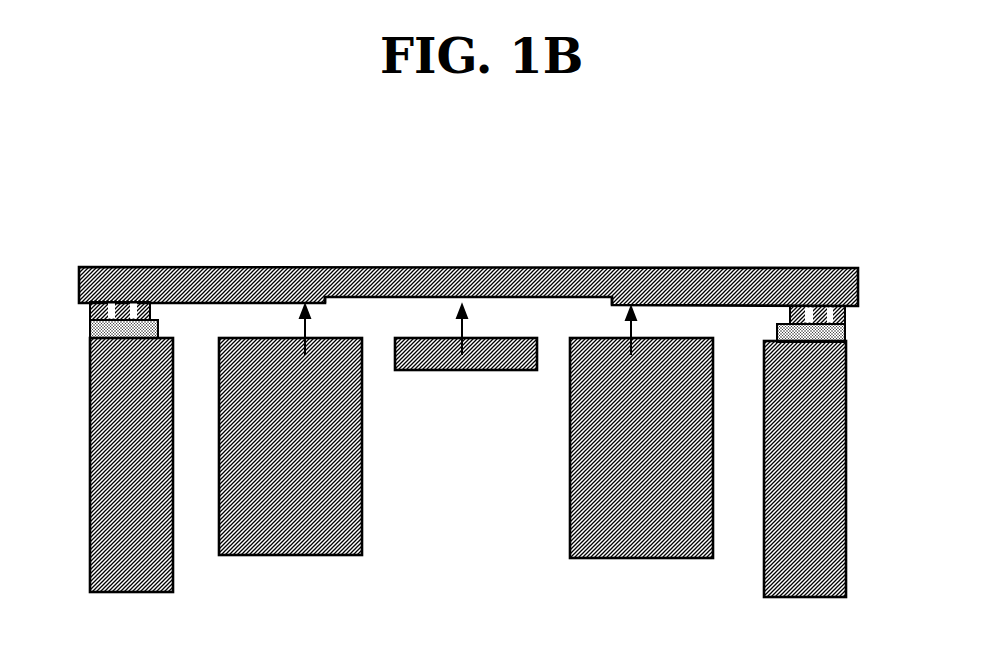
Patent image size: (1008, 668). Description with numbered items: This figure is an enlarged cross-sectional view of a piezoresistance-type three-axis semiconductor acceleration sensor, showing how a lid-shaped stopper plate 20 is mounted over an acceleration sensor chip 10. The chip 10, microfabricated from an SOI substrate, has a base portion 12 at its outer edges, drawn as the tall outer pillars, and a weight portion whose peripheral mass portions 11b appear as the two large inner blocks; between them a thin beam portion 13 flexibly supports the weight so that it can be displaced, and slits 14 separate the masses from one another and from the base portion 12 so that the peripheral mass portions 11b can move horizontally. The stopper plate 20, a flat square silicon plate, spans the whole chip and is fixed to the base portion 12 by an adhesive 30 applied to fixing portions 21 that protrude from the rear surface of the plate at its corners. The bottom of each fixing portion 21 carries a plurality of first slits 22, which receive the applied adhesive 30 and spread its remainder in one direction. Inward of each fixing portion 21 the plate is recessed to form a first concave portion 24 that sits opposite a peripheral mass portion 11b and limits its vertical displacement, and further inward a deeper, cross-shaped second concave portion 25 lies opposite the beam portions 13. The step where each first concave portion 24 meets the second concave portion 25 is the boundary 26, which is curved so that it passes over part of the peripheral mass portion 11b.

The acceleration sensor chip 10 is at (482, 495).
The peripheral mass portion 11b is at (347, 420).
The base portion 12 is at (110, 412).
The beam portion 13 is at (448, 370).
The slit 14 is at (548, 343).
The stopper plate 20 is at (468, 262).
The fixing portion 21 is at (90, 308).
The first slit 22 is at (103, 301).
The first concave portion 24 is at (208, 302).
The second concave portion 25 is at (420, 296).
The boundary 26 is at (327, 296).
The adhesive 30 is at (90, 327).